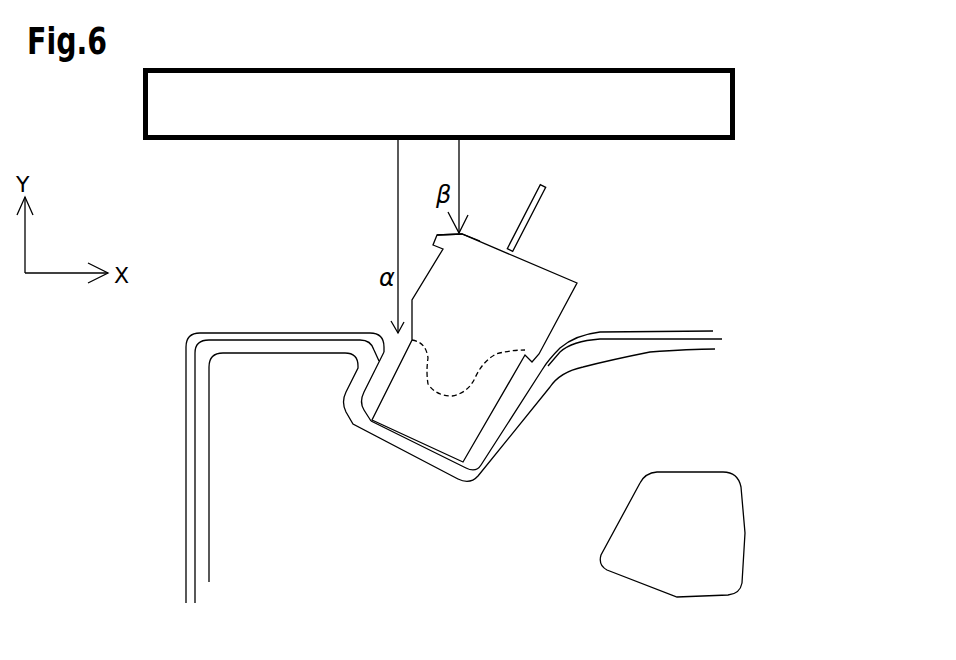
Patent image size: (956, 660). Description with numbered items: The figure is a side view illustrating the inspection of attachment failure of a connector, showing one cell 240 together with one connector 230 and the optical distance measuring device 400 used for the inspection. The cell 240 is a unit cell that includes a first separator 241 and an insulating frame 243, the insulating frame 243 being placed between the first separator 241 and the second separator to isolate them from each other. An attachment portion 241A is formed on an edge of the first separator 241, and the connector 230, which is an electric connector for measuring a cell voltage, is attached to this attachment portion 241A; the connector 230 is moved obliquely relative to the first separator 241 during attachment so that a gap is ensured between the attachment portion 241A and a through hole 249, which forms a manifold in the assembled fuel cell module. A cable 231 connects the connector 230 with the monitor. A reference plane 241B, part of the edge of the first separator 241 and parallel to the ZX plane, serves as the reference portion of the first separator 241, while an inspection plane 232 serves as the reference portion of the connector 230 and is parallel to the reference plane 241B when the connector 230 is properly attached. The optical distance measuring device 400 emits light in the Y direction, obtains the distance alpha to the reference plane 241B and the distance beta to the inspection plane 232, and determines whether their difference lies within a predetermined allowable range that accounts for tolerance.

The optical distance measuring device 400 is at (738, 102).
The connector 230 is at (530, 290).
The cable 231 is at (545, 202).
The inspection plane 232 is at (468, 232).
The cell 240 is at (753, 330).
The first separator 241 is at (223, 410).
The attachment portion 241A is at (388, 380).
The reference plane 241B is at (395, 332).
The insulating frame 243 is at (681, 333).
The through hole 249 is at (707, 553).